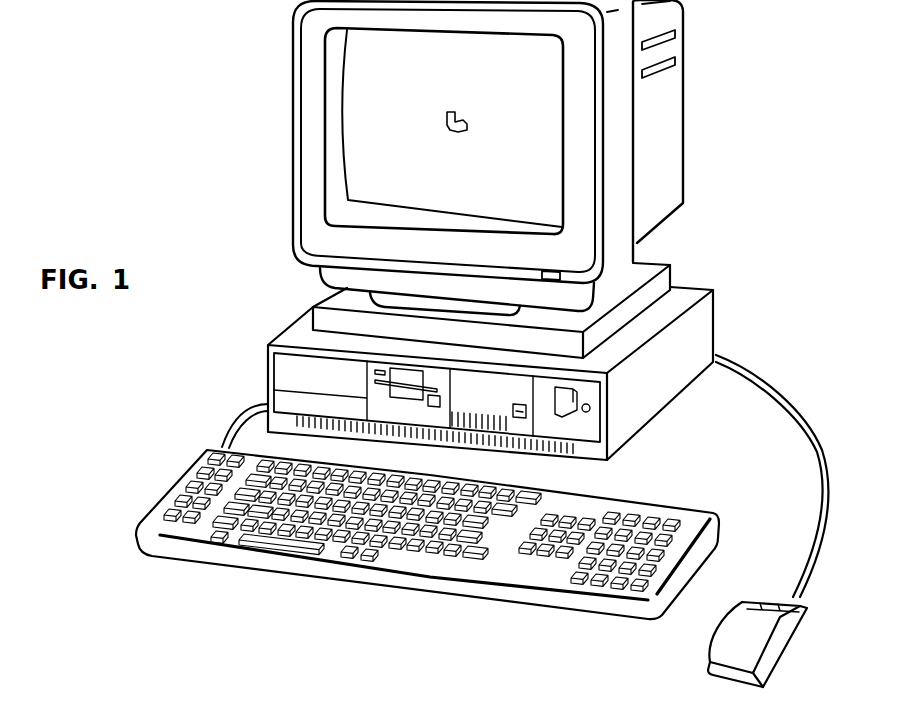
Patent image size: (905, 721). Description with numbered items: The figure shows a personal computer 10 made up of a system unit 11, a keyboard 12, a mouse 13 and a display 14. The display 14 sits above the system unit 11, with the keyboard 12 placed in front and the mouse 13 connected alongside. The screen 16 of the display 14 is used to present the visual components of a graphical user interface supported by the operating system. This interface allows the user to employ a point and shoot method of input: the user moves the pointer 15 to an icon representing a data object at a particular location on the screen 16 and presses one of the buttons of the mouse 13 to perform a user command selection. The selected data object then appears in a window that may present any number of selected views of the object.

The personal computer 10 is at (248, 222).
The system unit 11 is at (267, 362).
The keyboard 12 is at (174, 551).
The mouse 13 is at (797, 638).
The display 14 is at (292, 124).
The pointer 15 is at (452, 112).
The screen 16 is at (414, 163).